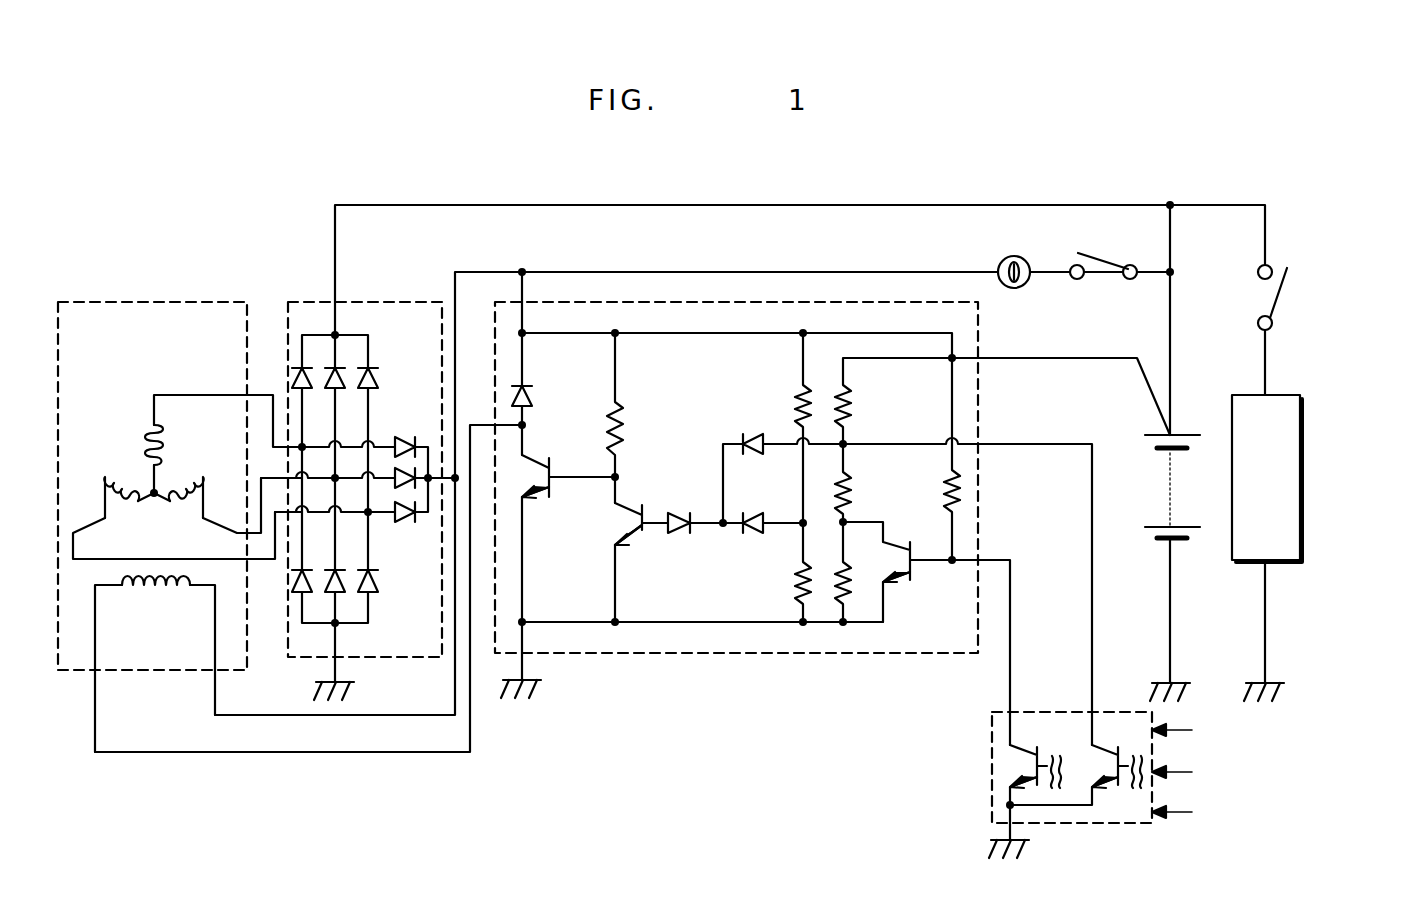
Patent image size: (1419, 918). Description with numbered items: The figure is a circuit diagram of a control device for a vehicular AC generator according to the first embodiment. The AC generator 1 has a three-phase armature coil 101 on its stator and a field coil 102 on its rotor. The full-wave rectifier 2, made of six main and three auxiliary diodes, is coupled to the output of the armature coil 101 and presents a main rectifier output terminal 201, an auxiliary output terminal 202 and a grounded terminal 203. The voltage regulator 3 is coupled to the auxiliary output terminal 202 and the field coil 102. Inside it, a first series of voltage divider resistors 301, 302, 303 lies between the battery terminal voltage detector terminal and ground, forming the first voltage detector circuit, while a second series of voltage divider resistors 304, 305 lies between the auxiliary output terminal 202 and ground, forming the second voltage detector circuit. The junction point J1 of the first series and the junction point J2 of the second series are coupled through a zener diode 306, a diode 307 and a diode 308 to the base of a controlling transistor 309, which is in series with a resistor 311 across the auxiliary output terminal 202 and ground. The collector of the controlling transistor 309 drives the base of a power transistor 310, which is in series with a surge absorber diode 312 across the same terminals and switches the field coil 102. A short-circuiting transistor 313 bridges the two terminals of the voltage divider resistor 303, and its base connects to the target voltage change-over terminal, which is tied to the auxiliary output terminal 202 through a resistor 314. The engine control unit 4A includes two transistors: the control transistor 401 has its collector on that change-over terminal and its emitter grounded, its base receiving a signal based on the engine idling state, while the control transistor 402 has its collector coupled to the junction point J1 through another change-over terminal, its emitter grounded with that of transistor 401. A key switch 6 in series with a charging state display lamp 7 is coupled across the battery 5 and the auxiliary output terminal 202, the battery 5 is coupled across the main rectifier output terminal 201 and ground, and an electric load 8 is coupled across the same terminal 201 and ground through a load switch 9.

The AC generator 1 is at (180, 494).
The three-phase armature coil 101 is at (145, 438).
The field coil 102 is at (154, 590).
The full-wave rectifier 2 is at (360, 468).
The main rectifier output terminal 201 is at (335, 335).
The auxiliary output terminal 202 is at (430, 490).
The grounded terminal 203 is at (338, 624).
The voltage regulator 3 is at (832, 508).
The voltage divider resistor 301 is at (856, 396).
The voltage divider resistor 302 is at (854, 484).
The voltage divider resistor 303 is at (848, 574).
The voltage divider resistor 304 is at (792, 396).
The voltage divider resistor 305 is at (796, 586).
The zener diode 306 is at (676, 516).
The diode 307 is at (748, 440).
The diode 308 is at (760, 516).
The controlling transistor 309 is at (640, 536).
The power transistor 310 is at (548, 497).
The resistor 311 is at (625, 426).
The surge absorber diode 312 is at (530, 394).
The short-circuiting transistor 313 is at (901, 580).
The resistor 314 is at (965, 475).
The junction point J1 is at (848, 440).
The junction point J2 is at (797, 525).
The engine control unit 4A is at (1165, 751).
The control transistor 401 is at (1043, 740).
The control transistor 402 is at (1120, 740).
The battery 5 is at (1160, 475).
The key switch 6 is at (1107, 259).
The charging state display lamp 7 is at (1003, 261).
The electric load 8 is at (1302, 480).
The load switch 9 is at (1288, 288).